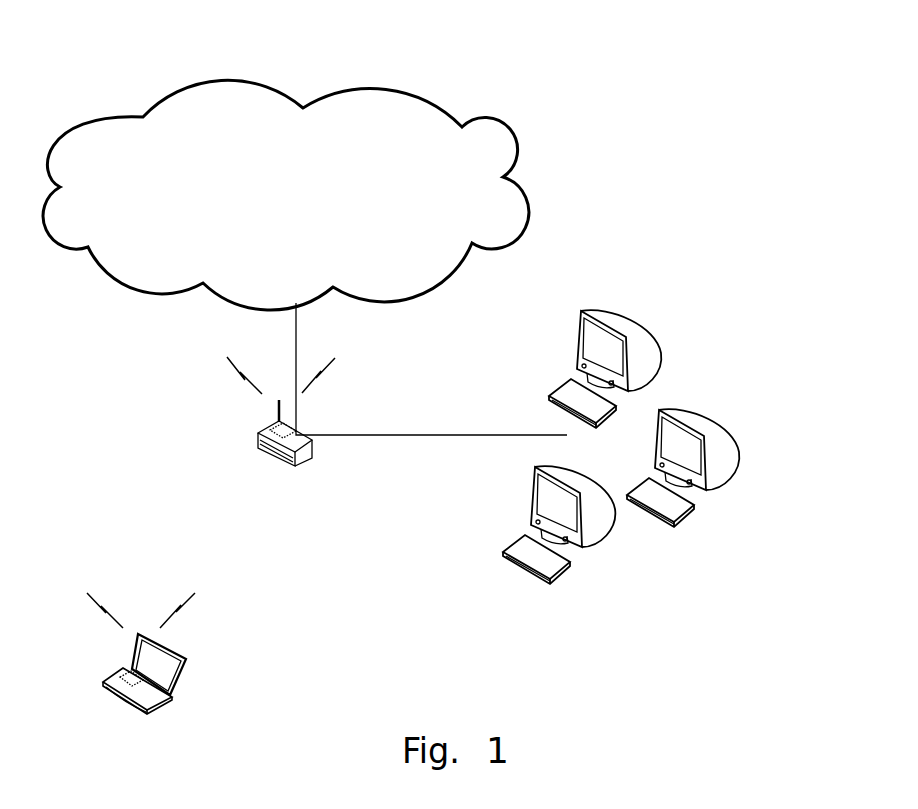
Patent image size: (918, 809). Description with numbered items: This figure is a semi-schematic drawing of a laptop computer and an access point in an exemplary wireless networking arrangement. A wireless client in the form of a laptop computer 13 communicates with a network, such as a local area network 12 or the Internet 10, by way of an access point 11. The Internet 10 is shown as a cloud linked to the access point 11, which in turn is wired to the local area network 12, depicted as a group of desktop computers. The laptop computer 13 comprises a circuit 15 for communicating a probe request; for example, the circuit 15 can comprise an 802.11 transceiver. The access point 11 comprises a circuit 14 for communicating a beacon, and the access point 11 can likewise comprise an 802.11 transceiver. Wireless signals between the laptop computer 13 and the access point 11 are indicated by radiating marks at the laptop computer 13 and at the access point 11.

The Internet 10 is at (363, 90).
The access point 11 is at (260, 443).
The local area network 12 is at (482, 502).
The laptop computer 13 is at (182, 687).
The circuit for communicating a beacon 14 is at (273, 423).
The circuit for communicating a probe request 15 is at (123, 684).